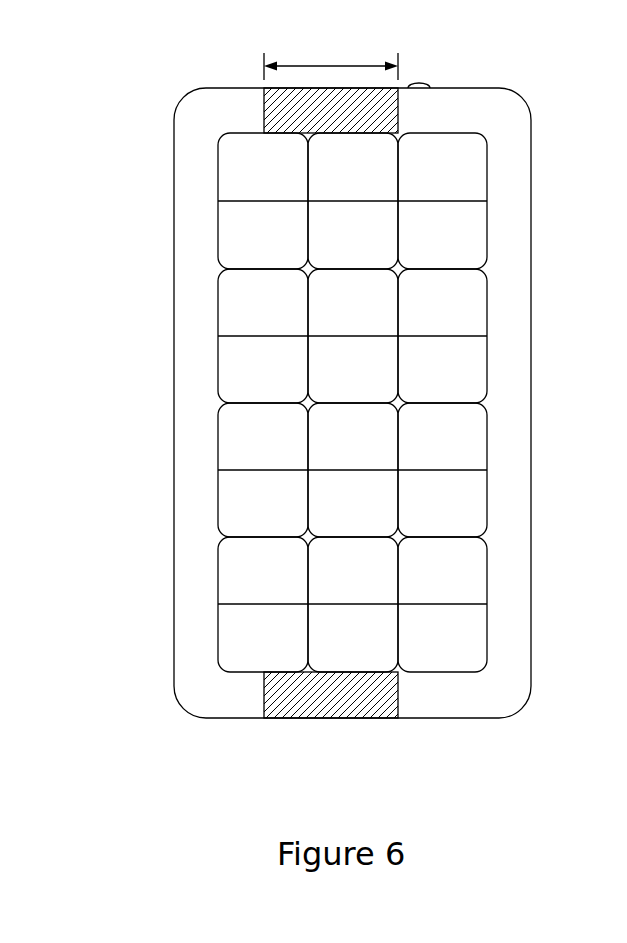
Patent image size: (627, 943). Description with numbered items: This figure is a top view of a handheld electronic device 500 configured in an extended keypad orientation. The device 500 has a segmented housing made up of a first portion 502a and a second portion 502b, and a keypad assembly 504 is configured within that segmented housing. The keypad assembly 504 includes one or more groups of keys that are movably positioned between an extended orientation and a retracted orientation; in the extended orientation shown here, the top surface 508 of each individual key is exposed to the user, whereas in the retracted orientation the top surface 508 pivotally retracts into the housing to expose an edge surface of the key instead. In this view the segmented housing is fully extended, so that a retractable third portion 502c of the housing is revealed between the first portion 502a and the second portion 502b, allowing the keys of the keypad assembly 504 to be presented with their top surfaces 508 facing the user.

The handheld electronic device 500 is at (119, 59).
The first portion 502a is at (515, 157).
The second portion 502b is at (193, 683).
The retractable third portion 502c is at (298, 707).
The keypad assembly 504 is at (163, 133).
The top surface 508 is at (470, 239).